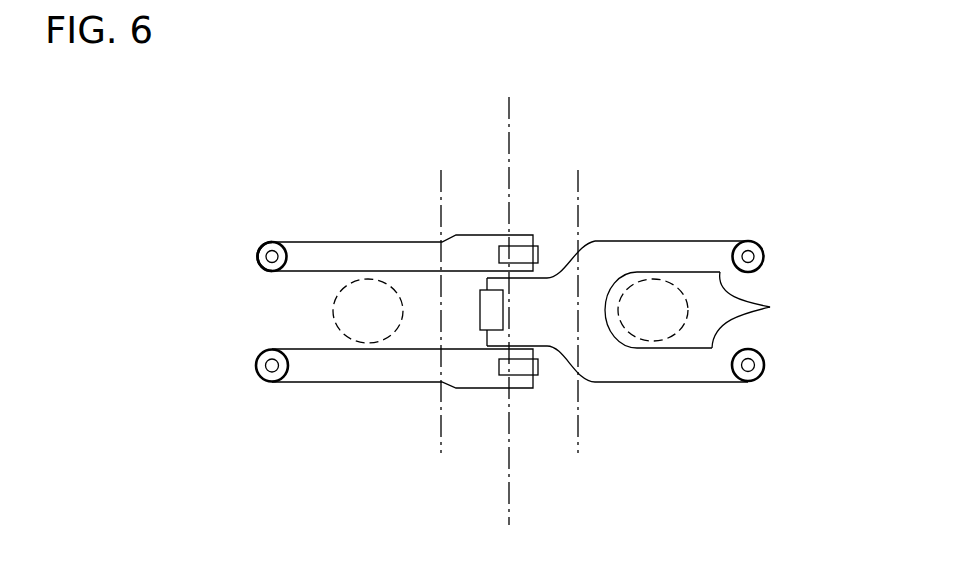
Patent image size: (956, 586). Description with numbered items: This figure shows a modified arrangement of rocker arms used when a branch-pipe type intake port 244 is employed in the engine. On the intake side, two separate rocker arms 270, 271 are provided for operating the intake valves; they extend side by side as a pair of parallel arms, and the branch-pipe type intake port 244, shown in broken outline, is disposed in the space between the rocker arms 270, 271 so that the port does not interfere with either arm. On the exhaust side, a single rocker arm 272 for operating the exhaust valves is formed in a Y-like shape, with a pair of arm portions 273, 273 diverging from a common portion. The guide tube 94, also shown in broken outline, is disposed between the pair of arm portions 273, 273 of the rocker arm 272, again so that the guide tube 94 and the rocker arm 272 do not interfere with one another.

The rocker arm 270 is at (378, 242).
The rocker arm 271 is at (352, 385).
The rocker arm 272 is at (700, 241).
The arm portion 273 is at (770, 307).
The branch-pipe type intake port 244 is at (335, 328).
The guide tube 94 is at (657, 345).